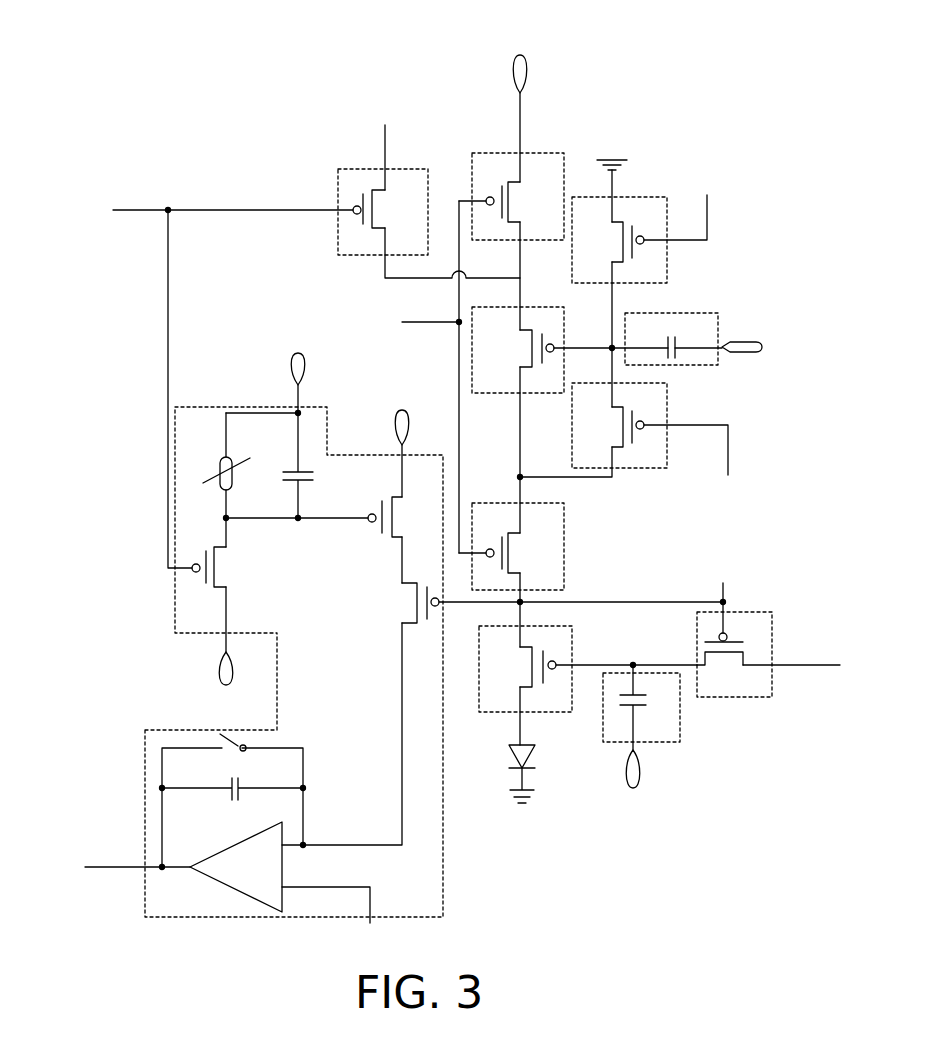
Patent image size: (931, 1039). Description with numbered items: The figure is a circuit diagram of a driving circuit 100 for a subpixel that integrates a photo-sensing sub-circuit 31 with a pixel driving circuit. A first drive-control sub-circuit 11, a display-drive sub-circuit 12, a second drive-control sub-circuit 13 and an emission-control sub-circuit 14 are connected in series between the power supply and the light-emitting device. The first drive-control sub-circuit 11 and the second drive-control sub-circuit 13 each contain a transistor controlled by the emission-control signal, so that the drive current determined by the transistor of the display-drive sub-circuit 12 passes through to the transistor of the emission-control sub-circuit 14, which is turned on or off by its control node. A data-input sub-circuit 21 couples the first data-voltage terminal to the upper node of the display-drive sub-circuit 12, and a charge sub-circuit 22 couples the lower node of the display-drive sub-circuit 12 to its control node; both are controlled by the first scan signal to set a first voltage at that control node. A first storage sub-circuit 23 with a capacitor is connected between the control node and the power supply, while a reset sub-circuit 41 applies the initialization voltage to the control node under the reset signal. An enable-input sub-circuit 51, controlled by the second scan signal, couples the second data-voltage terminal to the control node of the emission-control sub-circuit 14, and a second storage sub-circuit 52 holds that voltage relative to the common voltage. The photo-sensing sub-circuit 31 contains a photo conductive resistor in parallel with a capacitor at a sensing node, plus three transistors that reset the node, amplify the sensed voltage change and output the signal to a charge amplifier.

The driving circuit 100 is at (396, 44).
The first drive-control sub-circuit 11 is at (545, 153).
The display-drive sub-circuit 12 is at (535, 307).
The second drive-control sub-circuit 13 is at (480, 503).
The emission-control sub-circuit 14 is at (572, 626).
The data-input sub-circuit 21 is at (428, 169).
The charge sub-circuit 22 is at (660, 442).
The first storage sub-circuit 23 is at (708, 313).
The photo-sensing sub-circuit 31 is at (323, 430).
The reset sub-circuit 41 is at (645, 197).
The enable-input sub-circuit 51 is at (770, 612).
The second storage sub-circuit 52 is at (658, 674).